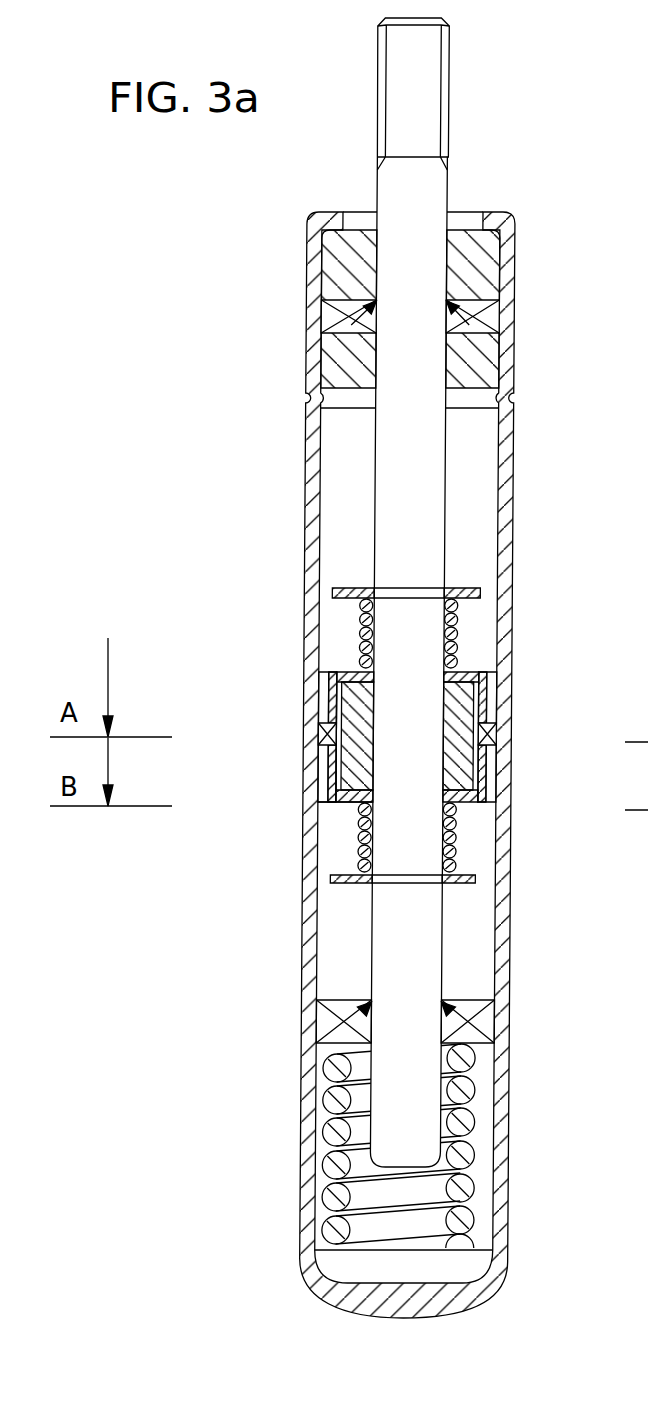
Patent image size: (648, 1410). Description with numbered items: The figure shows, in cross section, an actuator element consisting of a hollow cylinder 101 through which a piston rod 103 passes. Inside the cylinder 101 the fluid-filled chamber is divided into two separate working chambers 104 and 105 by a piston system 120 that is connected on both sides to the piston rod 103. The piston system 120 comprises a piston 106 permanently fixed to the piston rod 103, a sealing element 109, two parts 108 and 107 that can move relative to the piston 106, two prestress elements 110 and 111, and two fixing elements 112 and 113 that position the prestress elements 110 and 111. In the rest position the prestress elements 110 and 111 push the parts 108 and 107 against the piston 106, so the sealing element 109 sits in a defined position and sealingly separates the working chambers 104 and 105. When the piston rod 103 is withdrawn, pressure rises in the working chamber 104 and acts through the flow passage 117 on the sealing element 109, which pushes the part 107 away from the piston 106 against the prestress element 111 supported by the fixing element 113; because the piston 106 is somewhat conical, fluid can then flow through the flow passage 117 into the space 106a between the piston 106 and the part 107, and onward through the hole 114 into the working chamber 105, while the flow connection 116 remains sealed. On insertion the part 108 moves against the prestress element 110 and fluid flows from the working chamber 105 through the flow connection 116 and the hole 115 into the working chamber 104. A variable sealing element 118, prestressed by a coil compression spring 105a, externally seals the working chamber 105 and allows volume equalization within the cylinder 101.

The cylinder 101 is at (510, 440).
The piston rod 103 is at (397, 190).
The working chamber 104 is at (355, 455).
The working chamber 105 is at (465, 960).
The coil compression spring 105a is at (470, 1092).
The piston 106 is at (460, 763).
The space 106a is at (484, 792).
The part 107 is at (338, 795).
The part 108 is at (488, 700).
The sealing element 109 is at (486, 737).
The prestress element 110 is at (458, 636).
The prestress element 111 is at (458, 840).
The fixing element 112 is at (337, 594).
The fixing element 113 is at (338, 878).
The hole 114 is at (328, 804).
The hole 115 is at (355, 675).
The flow connection 116 is at (320, 735).
The flow passage 117 is at (330, 700).
The variable sealing element 118 is at (338, 1015).
The piston system 120 is at (237, 892).